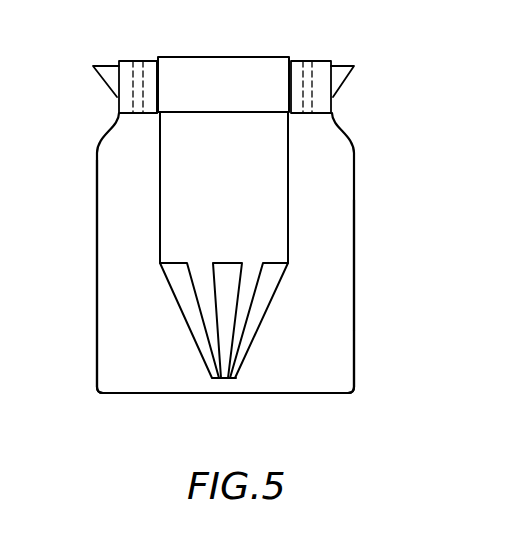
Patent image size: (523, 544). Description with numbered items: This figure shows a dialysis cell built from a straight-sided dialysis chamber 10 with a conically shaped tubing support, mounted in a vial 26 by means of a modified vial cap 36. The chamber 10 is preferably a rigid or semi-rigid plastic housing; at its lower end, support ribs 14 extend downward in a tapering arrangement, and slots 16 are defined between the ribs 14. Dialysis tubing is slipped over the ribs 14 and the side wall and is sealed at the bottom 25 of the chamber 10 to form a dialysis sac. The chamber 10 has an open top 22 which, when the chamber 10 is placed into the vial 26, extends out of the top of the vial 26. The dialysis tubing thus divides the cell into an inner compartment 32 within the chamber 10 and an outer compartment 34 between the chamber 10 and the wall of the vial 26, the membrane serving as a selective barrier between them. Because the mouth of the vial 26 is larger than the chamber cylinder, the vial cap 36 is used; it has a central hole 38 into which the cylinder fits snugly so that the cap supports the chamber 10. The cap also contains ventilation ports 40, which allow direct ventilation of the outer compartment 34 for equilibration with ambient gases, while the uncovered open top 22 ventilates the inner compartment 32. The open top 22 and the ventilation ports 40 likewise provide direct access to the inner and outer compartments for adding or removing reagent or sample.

The chamber 10 is at (156, 177).
The support ribs 14 is at (207, 315).
The slots 16 is at (227, 337).
The open top 22 is at (217, 56).
The bottom 25 is at (227, 380).
The vial 26 is at (355, 320).
The inner compartment 32 is at (267, 200).
The outer compartment 34 is at (335, 258).
The vial cap 36 is at (323, 62).
The central hole 38 is at (160, 61).
The ventilation ports 40 is at (140, 62).